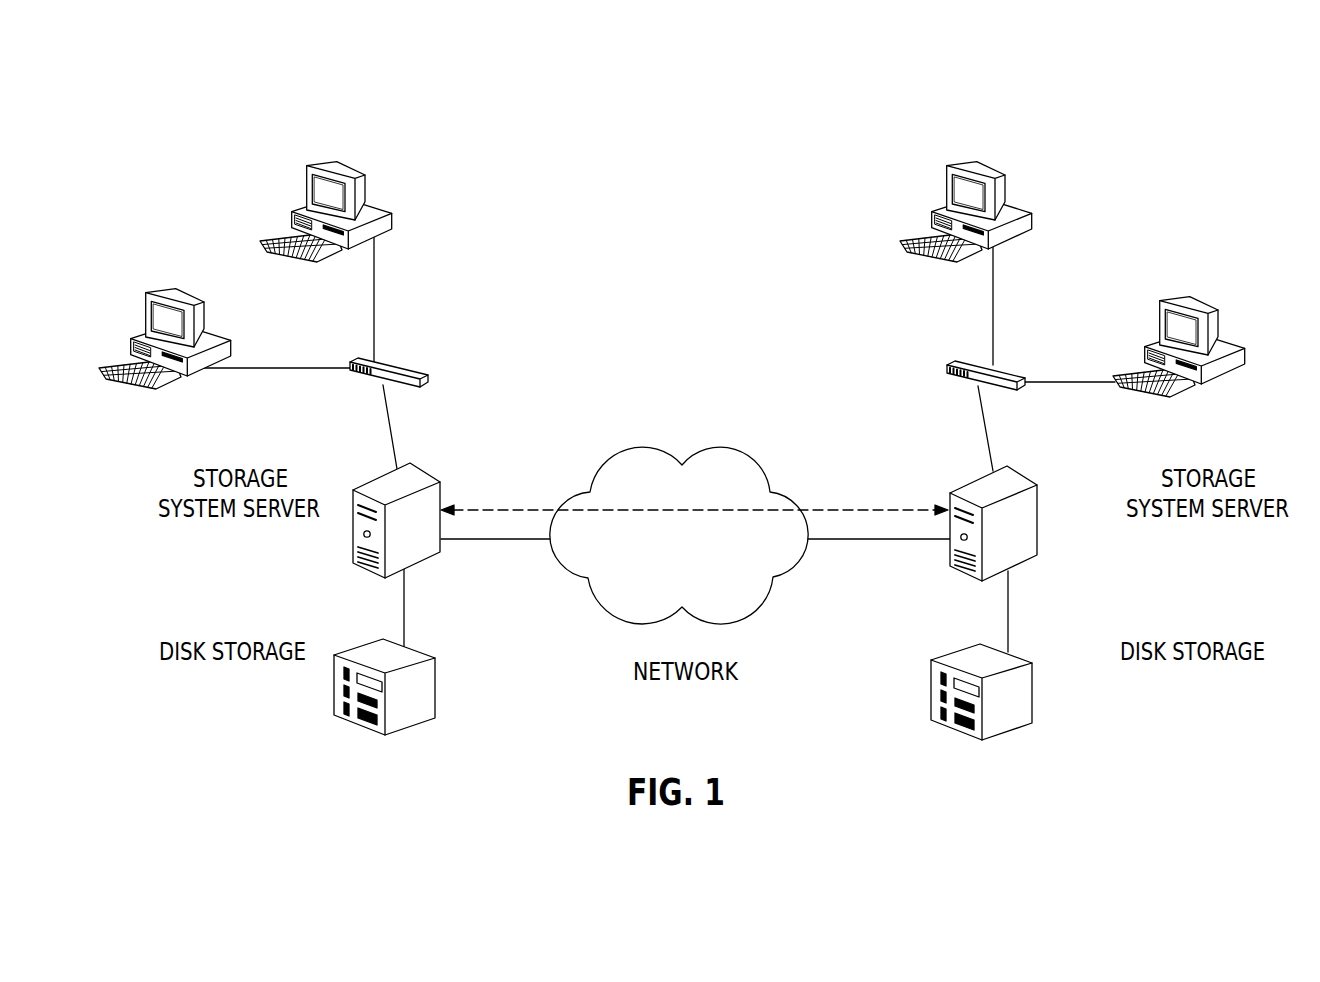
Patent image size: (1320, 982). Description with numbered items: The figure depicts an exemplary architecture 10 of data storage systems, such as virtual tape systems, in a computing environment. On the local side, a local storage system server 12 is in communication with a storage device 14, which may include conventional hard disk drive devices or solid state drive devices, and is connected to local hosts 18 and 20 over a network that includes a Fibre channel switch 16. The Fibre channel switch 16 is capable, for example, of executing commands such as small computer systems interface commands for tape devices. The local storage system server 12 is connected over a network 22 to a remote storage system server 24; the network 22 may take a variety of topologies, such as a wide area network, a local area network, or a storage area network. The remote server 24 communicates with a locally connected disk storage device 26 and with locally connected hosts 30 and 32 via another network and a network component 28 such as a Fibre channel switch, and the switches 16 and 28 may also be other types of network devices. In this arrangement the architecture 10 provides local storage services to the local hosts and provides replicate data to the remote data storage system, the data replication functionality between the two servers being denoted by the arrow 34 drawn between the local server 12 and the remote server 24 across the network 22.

The architecture 10 is at (1182, 139).
The local storage system server 12 is at (420, 467).
The storage device 14 is at (435, 690).
The Fibre channel switch 16 is at (392, 363).
The local host 18 is at (212, 313).
The local host 20 is at (372, 187).
The network 22 is at (758, 465).
The remote storage system server 24 is at (1038, 527).
The disk storage device 26 is at (1033, 693).
The Fibre channel switch 28 is at (967, 362).
The host 30 is at (1012, 187).
The host 32 is at (1225, 320).
The arrow 34 is at (833, 510).